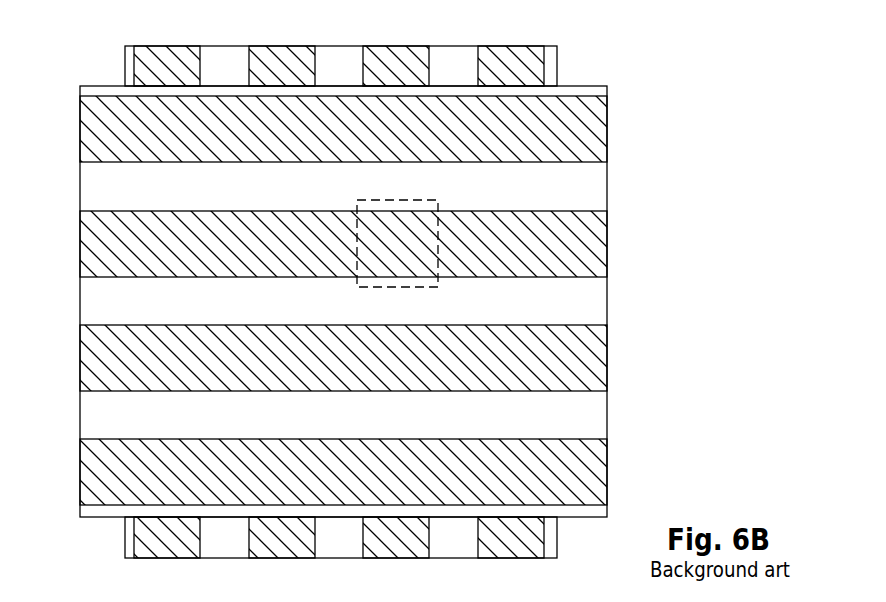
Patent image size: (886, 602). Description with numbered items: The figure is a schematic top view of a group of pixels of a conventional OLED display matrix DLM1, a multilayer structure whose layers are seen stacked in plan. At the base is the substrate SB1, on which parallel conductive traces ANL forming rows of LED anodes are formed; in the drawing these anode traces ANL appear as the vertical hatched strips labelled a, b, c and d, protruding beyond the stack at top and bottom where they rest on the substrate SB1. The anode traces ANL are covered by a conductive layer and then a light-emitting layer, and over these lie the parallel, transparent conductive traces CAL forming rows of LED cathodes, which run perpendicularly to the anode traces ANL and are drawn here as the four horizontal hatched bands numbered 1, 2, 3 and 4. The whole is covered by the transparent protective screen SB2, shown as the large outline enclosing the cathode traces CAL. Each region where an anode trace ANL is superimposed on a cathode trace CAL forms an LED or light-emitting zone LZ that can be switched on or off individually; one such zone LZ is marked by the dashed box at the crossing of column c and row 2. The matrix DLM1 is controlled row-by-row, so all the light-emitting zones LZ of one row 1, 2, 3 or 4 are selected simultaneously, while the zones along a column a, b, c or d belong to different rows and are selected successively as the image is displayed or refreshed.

The display matrix DLM1 is at (392, 289).
The transparent protective screen SB2 is at (607, 89).
The substrate SB1 is at (128, 548).
The cathode traces CAL is at (90, 128).
The anode traces ANL is at (306, 51).
The light-emitting zone LZ is at (427, 287).
The first cathode line 1 is at (326, 129).
The second cathode line 2 is at (356, 244).
The third cathode line 3 is at (356, 358).
The fourth cathode line 4 is at (356, 472).
The anode column a is at (167, 51).
The anode column b is at (282, 51).
The anode column c is at (396, 51).
The anode column d is at (511, 51).